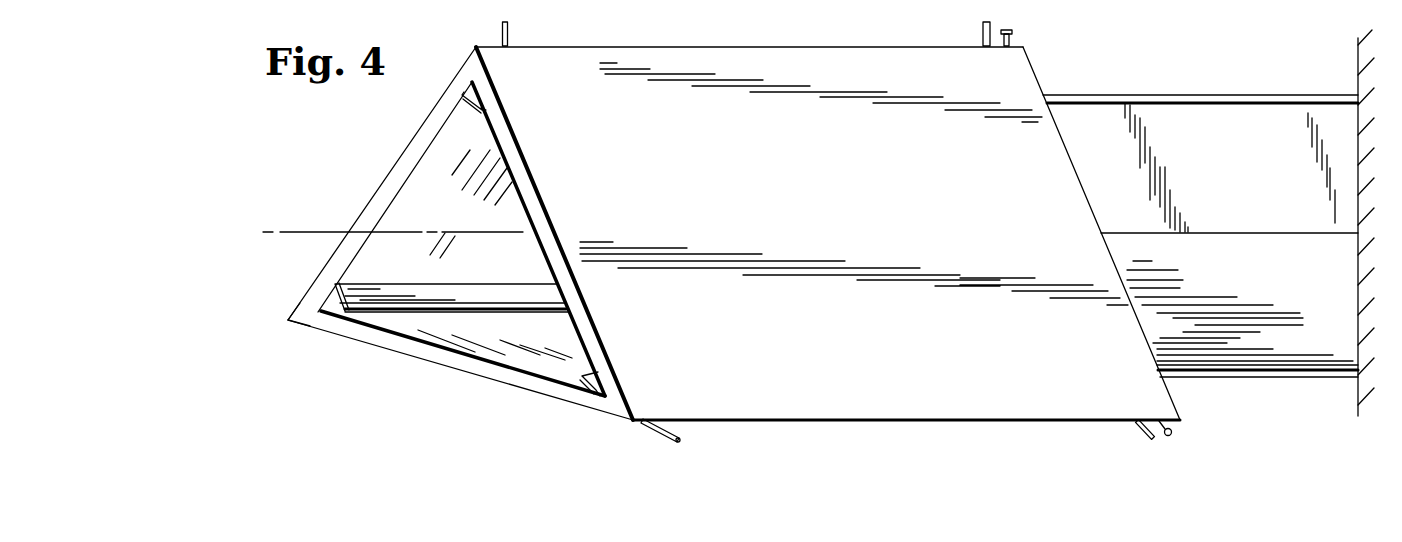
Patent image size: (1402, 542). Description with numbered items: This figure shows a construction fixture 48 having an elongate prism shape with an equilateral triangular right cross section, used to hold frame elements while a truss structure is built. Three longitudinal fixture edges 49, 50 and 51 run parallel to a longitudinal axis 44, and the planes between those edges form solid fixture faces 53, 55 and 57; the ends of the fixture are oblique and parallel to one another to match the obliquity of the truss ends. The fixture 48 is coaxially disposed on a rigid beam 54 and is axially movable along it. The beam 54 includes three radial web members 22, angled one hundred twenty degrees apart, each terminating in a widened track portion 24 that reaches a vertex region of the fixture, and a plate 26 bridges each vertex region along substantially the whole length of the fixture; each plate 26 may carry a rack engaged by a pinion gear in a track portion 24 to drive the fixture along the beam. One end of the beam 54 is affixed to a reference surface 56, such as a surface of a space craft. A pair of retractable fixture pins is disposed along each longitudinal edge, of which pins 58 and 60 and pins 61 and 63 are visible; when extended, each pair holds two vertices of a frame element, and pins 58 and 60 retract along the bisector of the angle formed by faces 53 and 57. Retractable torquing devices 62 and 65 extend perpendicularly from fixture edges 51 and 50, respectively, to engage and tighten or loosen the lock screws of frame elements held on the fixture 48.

The radial web member 22 is at (1228, 188).
The track portion 24 is at (1265, 94).
The plate 26 is at (472, 104).
The longitudinal axis 44 is at (310, 231).
The construction fixture 48 is at (783, 64).
The longitudinal fixture edge 49 is at (289, 322).
The longitudinal fixture edge 50 is at (835, 421).
The longitudinal fixture edge 51 is at (672, 46).
The fixture face 53 is at (1013, 65).
The rigid beam 54 is at (1190, 90).
The fixture face 55 is at (450, 366).
The reference surface 56 is at (1357, 55).
The fixture face 57 is at (412, 143).
The fixture pin 58 is at (509, 26).
The fixture pin 60 is at (985, 22).
The fixture pin 61 is at (668, 441).
The torquing device 62 is at (1010, 30).
The fixture pin 63 is at (1147, 438).
The torquing device 65 is at (1171, 434).